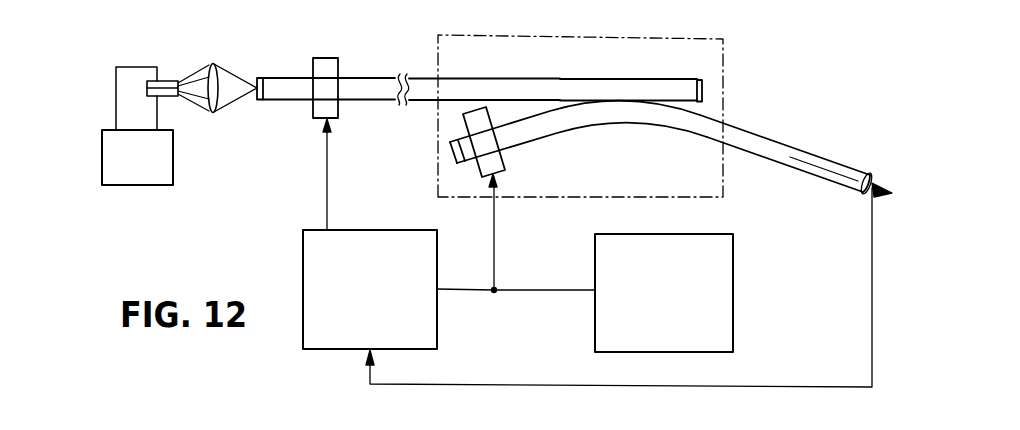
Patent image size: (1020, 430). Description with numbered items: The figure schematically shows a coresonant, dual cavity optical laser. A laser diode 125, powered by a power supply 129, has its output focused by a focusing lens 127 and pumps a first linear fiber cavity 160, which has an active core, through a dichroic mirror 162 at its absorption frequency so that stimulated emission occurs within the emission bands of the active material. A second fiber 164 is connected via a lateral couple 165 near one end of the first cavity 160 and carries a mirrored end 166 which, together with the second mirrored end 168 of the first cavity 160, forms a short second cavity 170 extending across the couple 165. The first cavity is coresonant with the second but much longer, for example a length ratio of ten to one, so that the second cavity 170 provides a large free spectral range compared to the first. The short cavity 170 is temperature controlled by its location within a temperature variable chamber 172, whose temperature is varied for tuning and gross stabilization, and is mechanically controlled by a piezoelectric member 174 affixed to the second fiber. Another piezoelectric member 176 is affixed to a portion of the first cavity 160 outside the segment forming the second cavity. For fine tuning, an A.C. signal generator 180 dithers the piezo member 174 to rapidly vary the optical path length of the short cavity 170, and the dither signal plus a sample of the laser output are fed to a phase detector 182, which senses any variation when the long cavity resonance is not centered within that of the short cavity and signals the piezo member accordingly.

The laser diode 125 is at (165, 81).
The focusing lens 127 is at (213, 65).
The power supply 129 is at (149, 173).
The first linear fiber cavity 160 is at (380, 85).
The dichroic mirror 162 is at (262, 78).
The second fiber 164 is at (757, 134).
The lateral couple 165 is at (613, 98).
The mirrored end 166 is at (463, 164).
The second mirrored end 168 is at (705, 89).
The second cavity 170 is at (563, 125).
The temperature variable chamber 172 is at (583, 35).
The piezoelectric member 174 is at (502, 158).
The piezoelectric member 176 is at (337, 107).
The A.C. signal generator 180 is at (733, 268).
The phase detector 182 is at (303, 272).